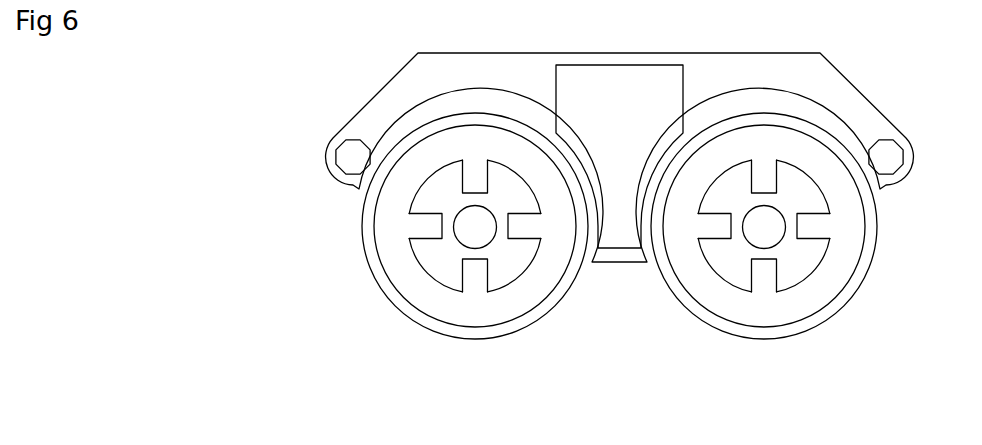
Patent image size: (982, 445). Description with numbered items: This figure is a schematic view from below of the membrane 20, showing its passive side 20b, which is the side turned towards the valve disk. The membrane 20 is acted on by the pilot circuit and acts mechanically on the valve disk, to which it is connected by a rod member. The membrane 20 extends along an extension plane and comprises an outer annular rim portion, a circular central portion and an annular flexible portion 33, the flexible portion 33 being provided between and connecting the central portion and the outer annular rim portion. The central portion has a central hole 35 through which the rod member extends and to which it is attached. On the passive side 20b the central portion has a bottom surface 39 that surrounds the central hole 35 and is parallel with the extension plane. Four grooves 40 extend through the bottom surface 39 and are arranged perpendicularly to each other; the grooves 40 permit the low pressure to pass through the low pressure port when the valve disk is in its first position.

The membrane 20 is at (342, 213).
The passive side 20b is at (565, 218).
The flexible portion 33 is at (400, 283).
The central hole 35 is at (472, 219).
The bottom surface 39 is at (430, 258).
The grooves 40 is at (418, 223).